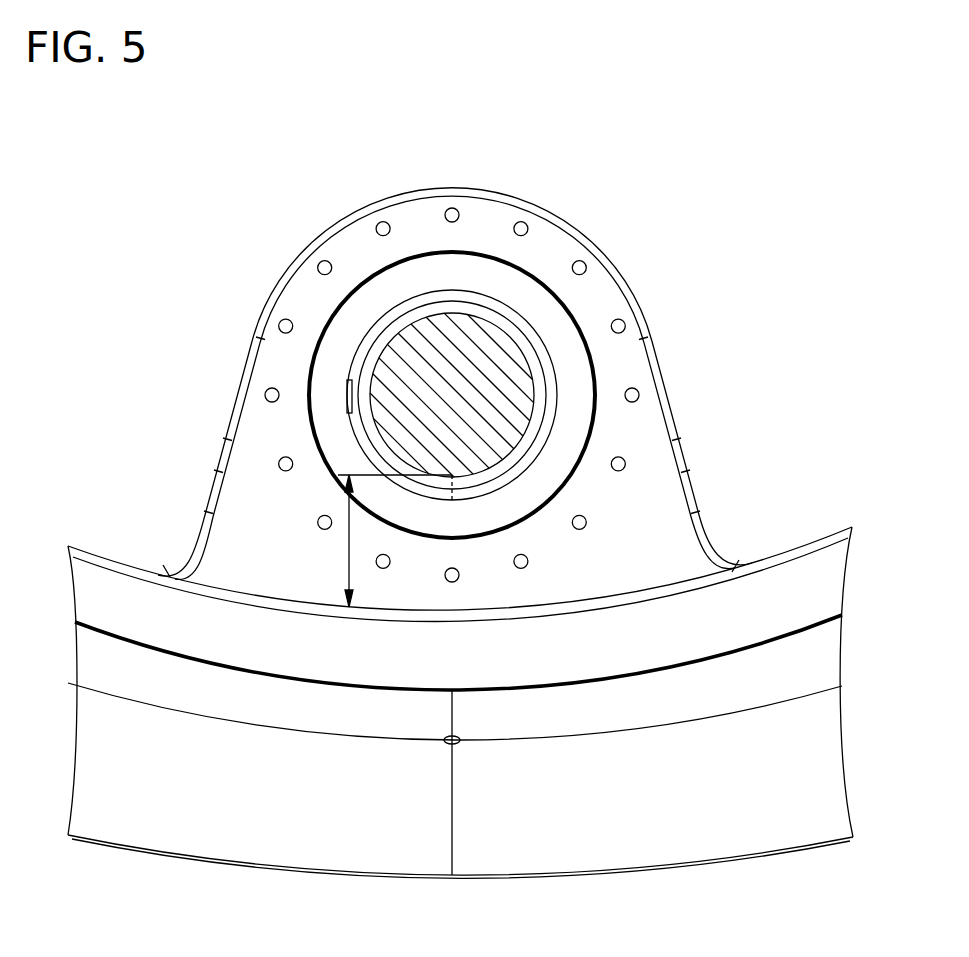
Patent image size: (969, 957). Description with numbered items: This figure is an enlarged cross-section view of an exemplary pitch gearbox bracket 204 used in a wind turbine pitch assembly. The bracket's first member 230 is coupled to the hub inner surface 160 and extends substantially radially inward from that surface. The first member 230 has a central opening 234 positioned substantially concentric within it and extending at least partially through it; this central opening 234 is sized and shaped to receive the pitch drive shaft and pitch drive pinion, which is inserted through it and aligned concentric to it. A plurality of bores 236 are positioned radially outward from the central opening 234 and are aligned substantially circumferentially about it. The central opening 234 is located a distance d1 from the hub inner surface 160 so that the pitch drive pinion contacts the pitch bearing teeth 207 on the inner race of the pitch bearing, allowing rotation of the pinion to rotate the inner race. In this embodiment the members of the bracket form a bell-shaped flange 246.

The pitch gearbox bracket 204 is at (461, 342).
The first member 230 is at (461, 385).
The central opening 234 is at (530, 397).
The bore 236 is at (626, 463).
The bell-shaped flange 246 is at (238, 410).
The pitch bearing teeth 207 is at (257, 597).
The inner surface 160 is at (813, 547).
The distance d1 is at (345, 547).